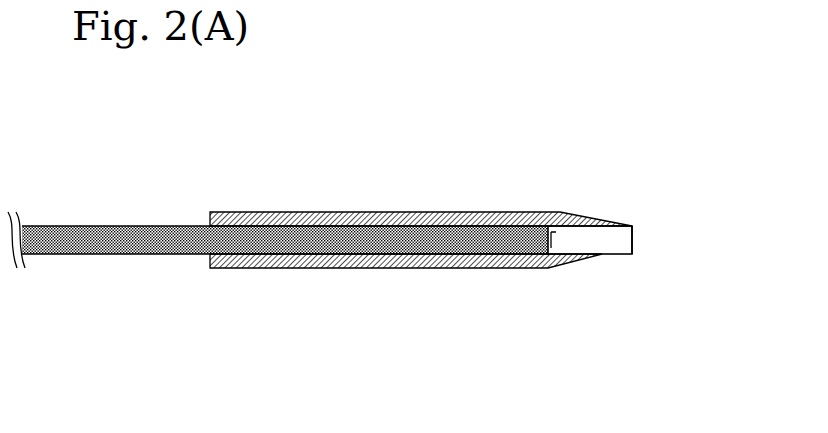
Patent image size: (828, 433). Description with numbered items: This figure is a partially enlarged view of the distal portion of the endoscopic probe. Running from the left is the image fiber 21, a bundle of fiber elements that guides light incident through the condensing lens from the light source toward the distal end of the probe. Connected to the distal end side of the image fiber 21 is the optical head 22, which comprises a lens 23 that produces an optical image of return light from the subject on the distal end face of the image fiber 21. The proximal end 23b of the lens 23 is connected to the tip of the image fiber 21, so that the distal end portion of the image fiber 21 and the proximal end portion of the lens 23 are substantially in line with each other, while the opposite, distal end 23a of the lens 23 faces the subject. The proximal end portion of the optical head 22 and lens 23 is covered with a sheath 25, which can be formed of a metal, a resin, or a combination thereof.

The image fiber 21 is at (141, 234).
The optical head 22 is at (290, 268).
The lens 23 is at (618, 254).
The distal end of tip member 23a is at (632, 233).
The proximal end of the lens 23b is at (557, 233).
The sheath 25 is at (401, 212).